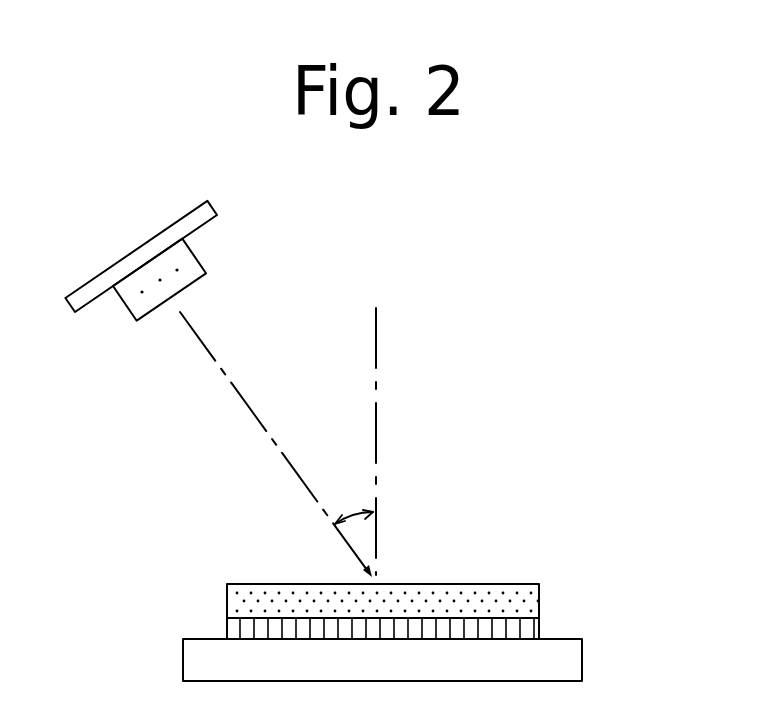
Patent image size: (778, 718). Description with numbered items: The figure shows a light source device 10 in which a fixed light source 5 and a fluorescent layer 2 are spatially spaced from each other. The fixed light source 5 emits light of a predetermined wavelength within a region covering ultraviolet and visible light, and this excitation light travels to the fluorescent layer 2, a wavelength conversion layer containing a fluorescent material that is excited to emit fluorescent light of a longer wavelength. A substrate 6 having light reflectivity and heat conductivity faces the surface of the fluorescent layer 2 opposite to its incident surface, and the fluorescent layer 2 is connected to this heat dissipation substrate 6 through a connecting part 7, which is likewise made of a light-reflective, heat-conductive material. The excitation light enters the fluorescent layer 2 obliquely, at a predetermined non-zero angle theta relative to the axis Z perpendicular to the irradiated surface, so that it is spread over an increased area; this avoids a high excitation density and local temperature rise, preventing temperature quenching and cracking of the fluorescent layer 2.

The light source device 10 is at (554, 300).
The fixed light source 5 is at (200, 270).
The fluorescent layer 2 is at (533, 597).
The connecting part 7 is at (537, 628).
The substrate 6 is at (575, 658).